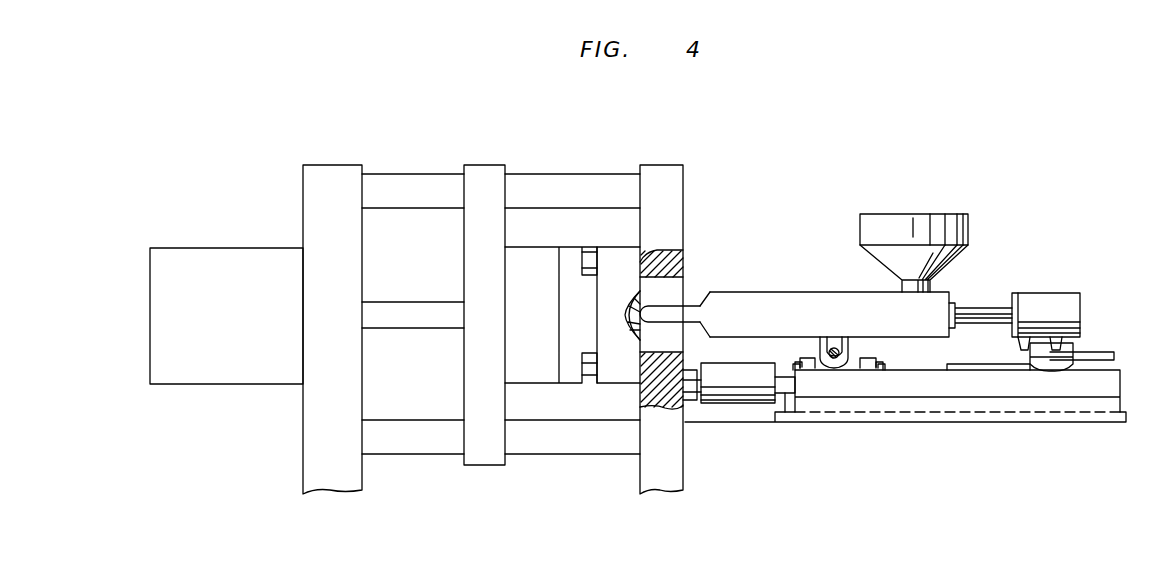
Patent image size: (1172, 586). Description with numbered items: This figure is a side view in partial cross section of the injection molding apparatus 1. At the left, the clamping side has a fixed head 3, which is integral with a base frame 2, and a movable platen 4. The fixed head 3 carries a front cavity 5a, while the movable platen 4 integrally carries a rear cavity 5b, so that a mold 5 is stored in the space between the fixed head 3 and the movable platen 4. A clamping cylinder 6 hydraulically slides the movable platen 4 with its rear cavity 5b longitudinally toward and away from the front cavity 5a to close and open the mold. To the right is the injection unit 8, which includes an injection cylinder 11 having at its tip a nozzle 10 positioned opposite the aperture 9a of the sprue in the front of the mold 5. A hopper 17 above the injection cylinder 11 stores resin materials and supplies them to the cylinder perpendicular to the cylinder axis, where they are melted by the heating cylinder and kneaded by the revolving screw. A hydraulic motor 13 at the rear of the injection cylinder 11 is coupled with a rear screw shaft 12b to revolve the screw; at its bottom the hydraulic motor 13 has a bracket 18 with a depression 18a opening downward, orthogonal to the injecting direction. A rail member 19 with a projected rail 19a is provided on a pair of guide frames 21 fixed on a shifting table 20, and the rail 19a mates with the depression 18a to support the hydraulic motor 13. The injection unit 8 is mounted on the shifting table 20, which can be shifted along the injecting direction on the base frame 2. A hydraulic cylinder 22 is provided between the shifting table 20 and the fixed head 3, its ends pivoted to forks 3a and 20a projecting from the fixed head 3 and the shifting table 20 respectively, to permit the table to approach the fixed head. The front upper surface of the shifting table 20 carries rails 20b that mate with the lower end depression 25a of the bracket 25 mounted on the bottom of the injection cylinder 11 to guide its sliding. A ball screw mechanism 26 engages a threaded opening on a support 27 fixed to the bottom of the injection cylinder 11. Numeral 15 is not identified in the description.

The injection molding apparatus 1 is at (436, 141).
The base frame 2 is at (900, 480).
The fixed head 3 is at (665, 165).
The fork 3a is at (688, 412).
The movable platen 4 is at (487, 165).
The mold 5 is at (580, 370).
The front cavity 5a is at (612, 247).
The rear cavity 5b is at (533, 247).
The clamping cylinder 6 is at (240, 248).
The injection unit 8 is at (788, 292).
The aperture 9a is at (630, 302).
The nozzle 10 is at (643, 306).
The injection cylinder 11 is at (731, 329).
The rear screw shaft 12b is at (980, 308).
The hydraulic motor 13 is at (1050, 293).
The screw 15 is at (832, 292).
The hopper 17 is at (904, 216).
The bracket 18 is at (1060, 345).
The depression 18a is at (1050, 340).
The rail member 19 is at (1114, 357).
The projected rail 19a is at (1030, 346).
The shifting table 20 is at (1120, 386).
The fork 20a is at (785, 400).
The rail 20b is at (793, 367).
The guide frame 21 is at (962, 364).
The hydraulic cylinder 22 is at (740, 404).
The bracket 25 is at (787, 367).
The lower end depression 25a is at (812, 360).
The ball screw mechanism 26 is at (836, 345).
The support 27 is at (838, 358).